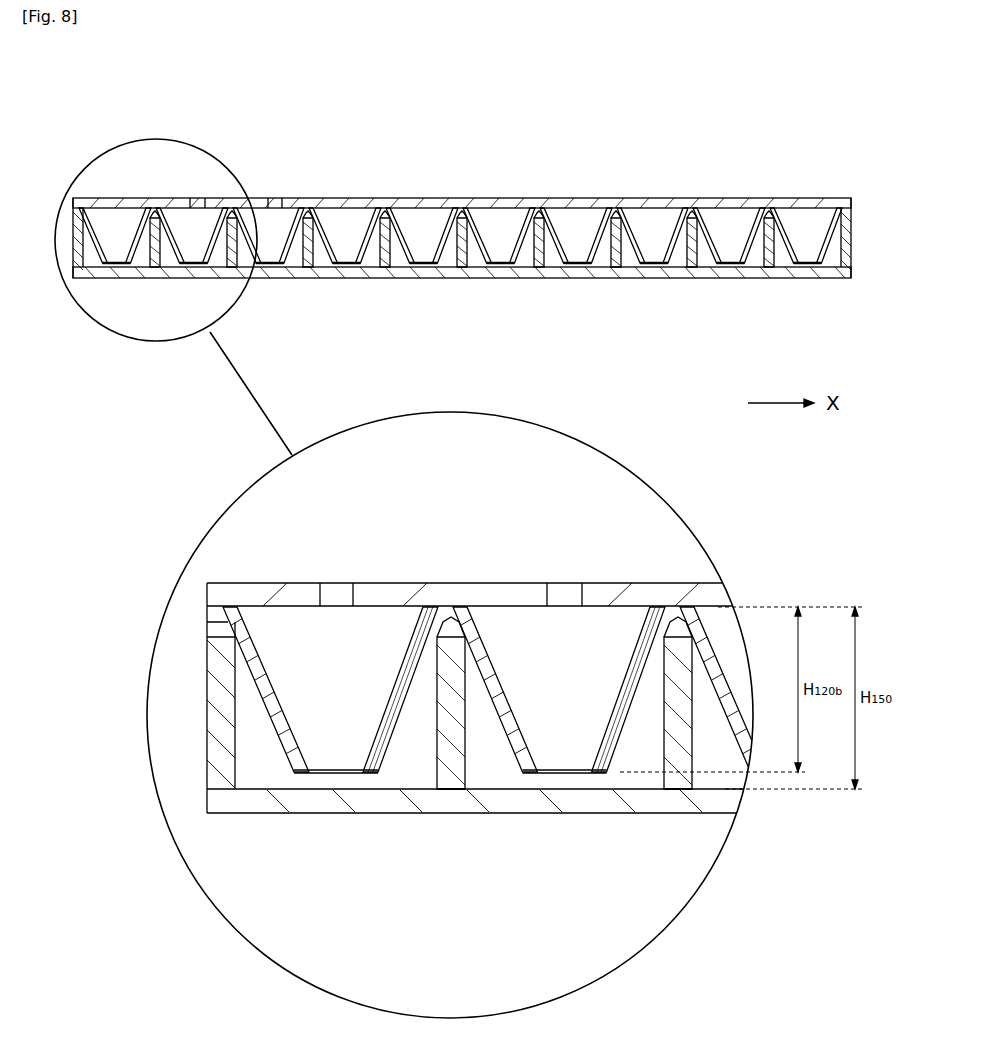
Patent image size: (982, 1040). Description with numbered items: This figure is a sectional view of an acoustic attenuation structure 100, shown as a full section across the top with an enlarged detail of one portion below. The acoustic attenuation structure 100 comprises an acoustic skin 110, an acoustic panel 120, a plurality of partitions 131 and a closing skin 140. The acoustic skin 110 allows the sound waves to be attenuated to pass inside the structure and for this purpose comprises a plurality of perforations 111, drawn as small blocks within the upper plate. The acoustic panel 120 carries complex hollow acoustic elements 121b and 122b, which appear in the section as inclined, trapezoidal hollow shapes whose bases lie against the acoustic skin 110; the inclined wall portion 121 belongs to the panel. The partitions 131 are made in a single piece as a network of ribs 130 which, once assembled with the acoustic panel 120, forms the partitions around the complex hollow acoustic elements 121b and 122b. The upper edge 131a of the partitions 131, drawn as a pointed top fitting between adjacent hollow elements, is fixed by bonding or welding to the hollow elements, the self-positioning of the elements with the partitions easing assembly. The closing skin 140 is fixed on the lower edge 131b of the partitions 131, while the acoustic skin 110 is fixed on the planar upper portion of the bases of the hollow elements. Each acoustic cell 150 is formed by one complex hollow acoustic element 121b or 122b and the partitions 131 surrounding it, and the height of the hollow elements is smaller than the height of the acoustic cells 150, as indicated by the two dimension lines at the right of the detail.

The acoustic attenuation structure 100 is at (700, 128).
The acoustic skin 110 is at (574, 197).
The perforations 111 is at (273, 197).
The acoustic panel 120 is at (332, 228).
The inclined portion of core sheet 121 is at (500, 680).
The complex hollow acoustic element 121b is at (280, 680).
The complex hollow acoustic element 122b is at (679, 230).
The network of ribs 130 is at (852, 230).
The partitions 131 is at (684, 250).
The upper edge of partitions 131a is at (453, 628).
The lower edge of partitions 131b is at (453, 790).
The closing skin 140 is at (330, 280).
The acoustic cells 150 is at (503, 227).